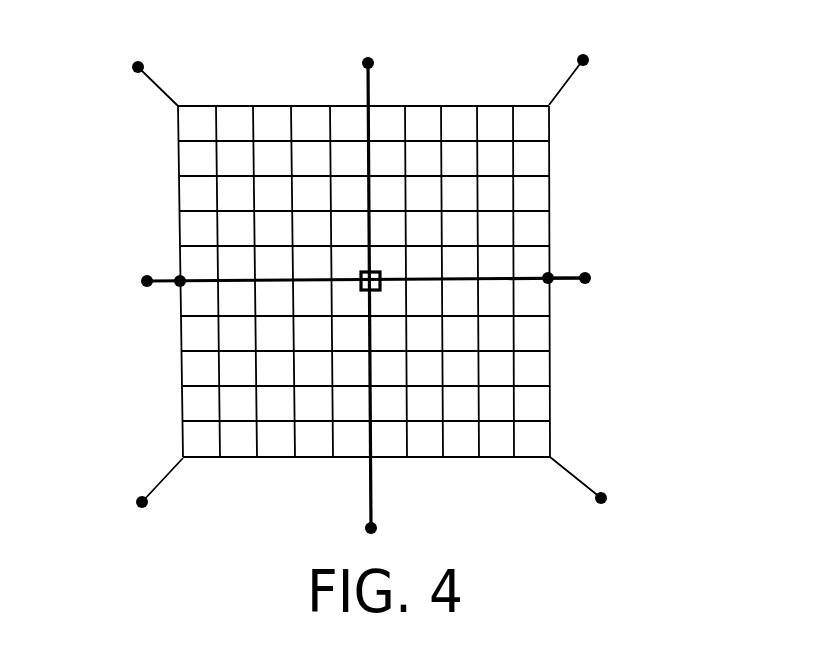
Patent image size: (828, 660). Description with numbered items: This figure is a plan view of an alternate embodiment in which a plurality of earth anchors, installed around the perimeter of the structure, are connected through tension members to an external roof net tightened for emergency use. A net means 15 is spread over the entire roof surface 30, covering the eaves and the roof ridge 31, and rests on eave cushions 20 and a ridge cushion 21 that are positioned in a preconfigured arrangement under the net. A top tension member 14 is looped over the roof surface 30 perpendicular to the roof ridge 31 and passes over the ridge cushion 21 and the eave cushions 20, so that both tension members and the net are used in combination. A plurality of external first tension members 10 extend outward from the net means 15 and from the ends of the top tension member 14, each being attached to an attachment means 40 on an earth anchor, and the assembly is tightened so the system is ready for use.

The first tension member 10 is at (368, 90).
The top tension member 14 is at (373, 224).
The net means 15 is at (513, 163).
The eave cushion 20 is at (551, 273).
The ridge cushion 21 is at (360, 290).
The roof surface 30 is at (532, 122).
The roof ridge 31 is at (373, 175).
The attachment means 40 is at (141, 60).